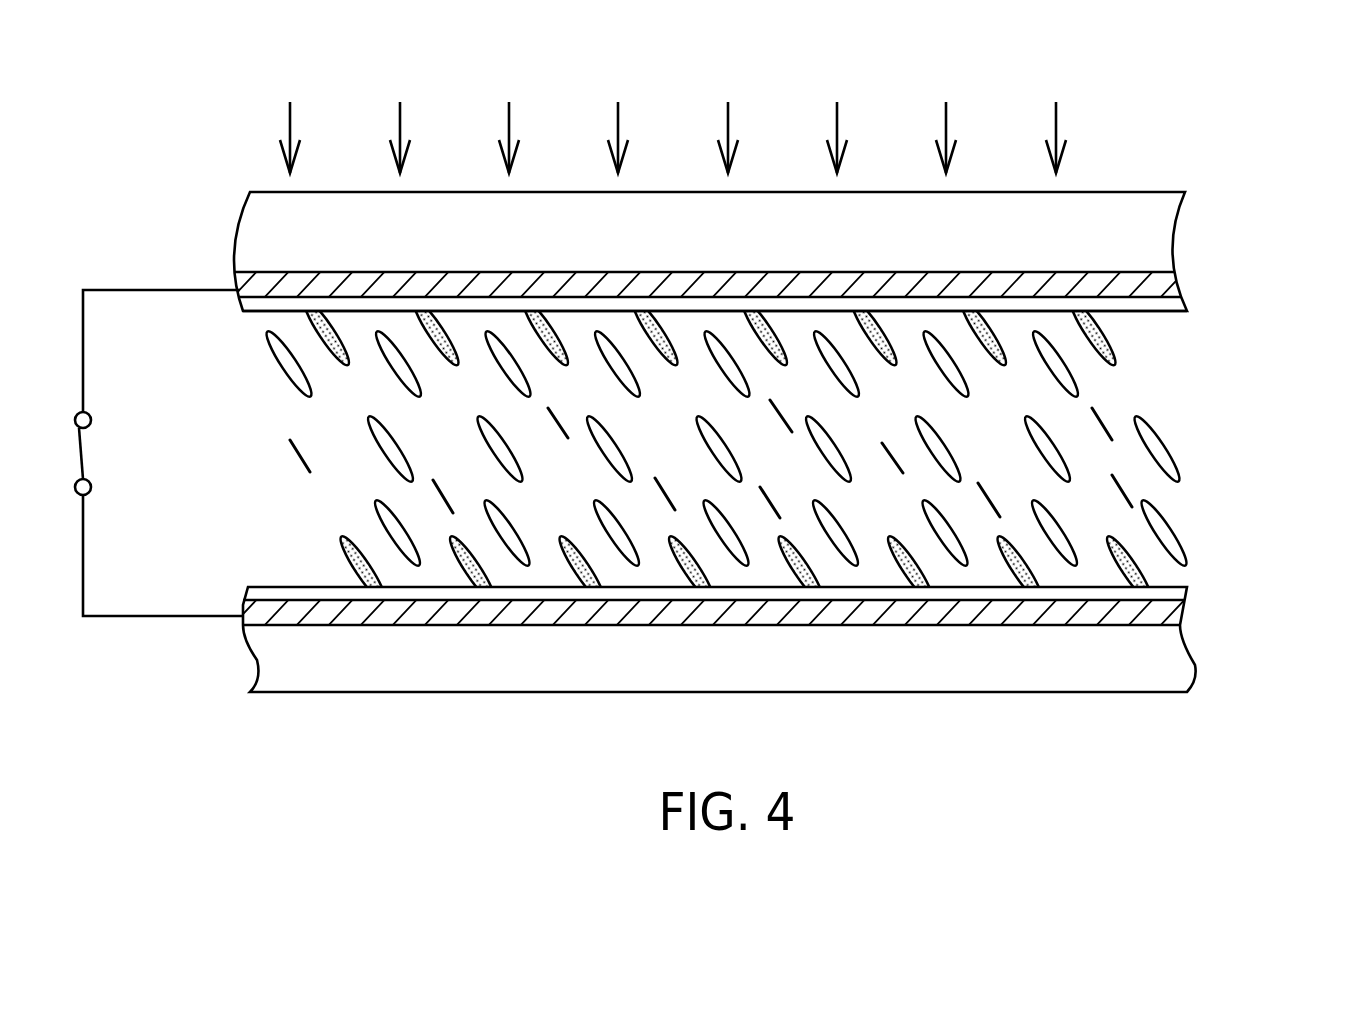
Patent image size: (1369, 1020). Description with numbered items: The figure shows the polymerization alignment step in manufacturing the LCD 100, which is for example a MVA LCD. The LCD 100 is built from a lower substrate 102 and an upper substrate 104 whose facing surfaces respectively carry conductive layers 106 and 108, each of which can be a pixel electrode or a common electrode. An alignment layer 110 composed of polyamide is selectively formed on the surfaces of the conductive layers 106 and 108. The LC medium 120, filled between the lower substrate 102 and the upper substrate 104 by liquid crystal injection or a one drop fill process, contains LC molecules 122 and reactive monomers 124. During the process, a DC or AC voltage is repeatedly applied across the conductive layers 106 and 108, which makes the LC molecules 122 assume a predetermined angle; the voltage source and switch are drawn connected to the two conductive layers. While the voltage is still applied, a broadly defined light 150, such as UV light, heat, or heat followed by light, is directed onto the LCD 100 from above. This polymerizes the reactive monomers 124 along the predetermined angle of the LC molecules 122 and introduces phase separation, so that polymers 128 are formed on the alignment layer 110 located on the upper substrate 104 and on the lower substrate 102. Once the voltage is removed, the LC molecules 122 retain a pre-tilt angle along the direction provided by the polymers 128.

The LCD 100 is at (227, 713).
The lower substrate 102 is at (694, 673).
The upper substrate 104 is at (694, 247).
The conductive layer 106 is at (1180, 620).
The conductive layer 108 is at (1180, 287).
The alignment layer 110 is at (1185, 305).
The LC medium 120 is at (1248, 572).
The LC molecules 122 is at (1160, 447).
The reactive monomers 124 is at (1122, 492).
The polymers 128 is at (1103, 335).
The light 150 is at (1056, 117).